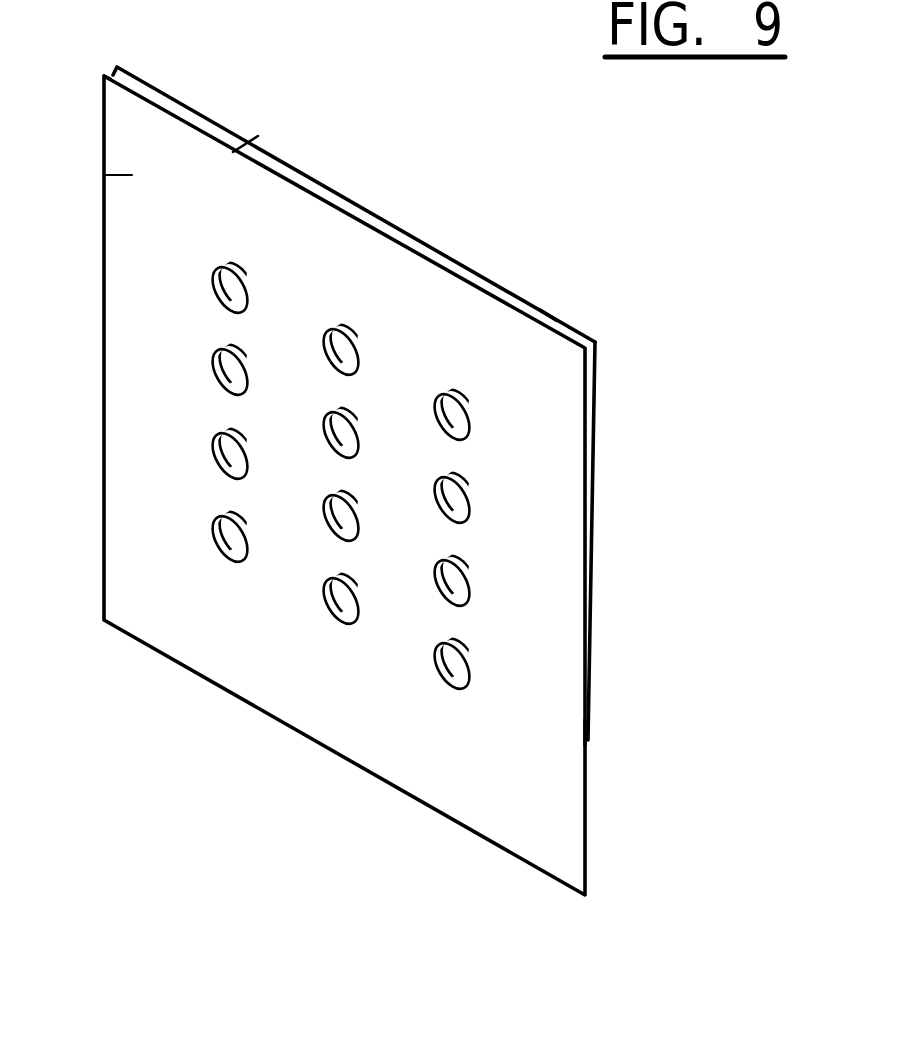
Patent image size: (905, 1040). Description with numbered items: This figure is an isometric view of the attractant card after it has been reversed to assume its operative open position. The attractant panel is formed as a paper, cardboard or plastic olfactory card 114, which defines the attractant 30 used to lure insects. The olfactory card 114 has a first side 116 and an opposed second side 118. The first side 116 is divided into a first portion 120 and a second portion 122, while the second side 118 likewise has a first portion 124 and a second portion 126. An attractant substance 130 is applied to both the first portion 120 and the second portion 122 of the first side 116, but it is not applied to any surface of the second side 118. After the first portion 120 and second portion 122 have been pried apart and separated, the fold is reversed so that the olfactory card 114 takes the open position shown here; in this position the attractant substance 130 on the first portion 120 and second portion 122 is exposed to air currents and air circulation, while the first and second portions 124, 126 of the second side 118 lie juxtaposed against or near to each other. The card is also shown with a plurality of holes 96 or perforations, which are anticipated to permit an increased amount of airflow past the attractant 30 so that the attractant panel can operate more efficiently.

The attractant 30 is at (378, 455).
The holes 96 is at (237, 363).
The olfactory card 114 is at (588, 732).
The first side 116 is at (108, 175).
The second side 118 is at (268, 152).
The first portion 120 is at (547, 310).
The second portion 122 is at (199, 638).
The first portion 124 is at (149, 91).
The second portion 126 is at (104, 76).
The attractant substance 130 is at (594, 476).